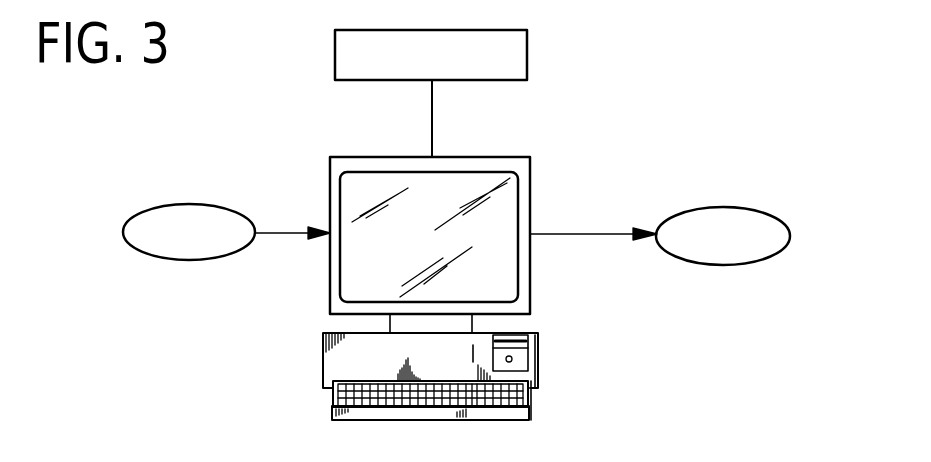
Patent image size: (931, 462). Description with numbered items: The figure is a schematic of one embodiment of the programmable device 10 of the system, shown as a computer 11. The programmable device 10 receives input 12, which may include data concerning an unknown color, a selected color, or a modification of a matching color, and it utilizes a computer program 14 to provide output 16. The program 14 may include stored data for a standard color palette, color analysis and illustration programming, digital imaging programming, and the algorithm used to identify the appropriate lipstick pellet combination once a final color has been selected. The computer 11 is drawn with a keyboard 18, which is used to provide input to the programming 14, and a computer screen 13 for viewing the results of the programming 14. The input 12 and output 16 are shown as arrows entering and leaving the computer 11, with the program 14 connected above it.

The programmable device 10 is at (520, 286).
The computer 11 is at (538, 349).
The input 12 is at (135, 213).
The computer screen 13 is at (490, 270).
The computer program 14 is at (527, 44).
The output 16 is at (773, 210).
The keyboard 18 is at (530, 410).